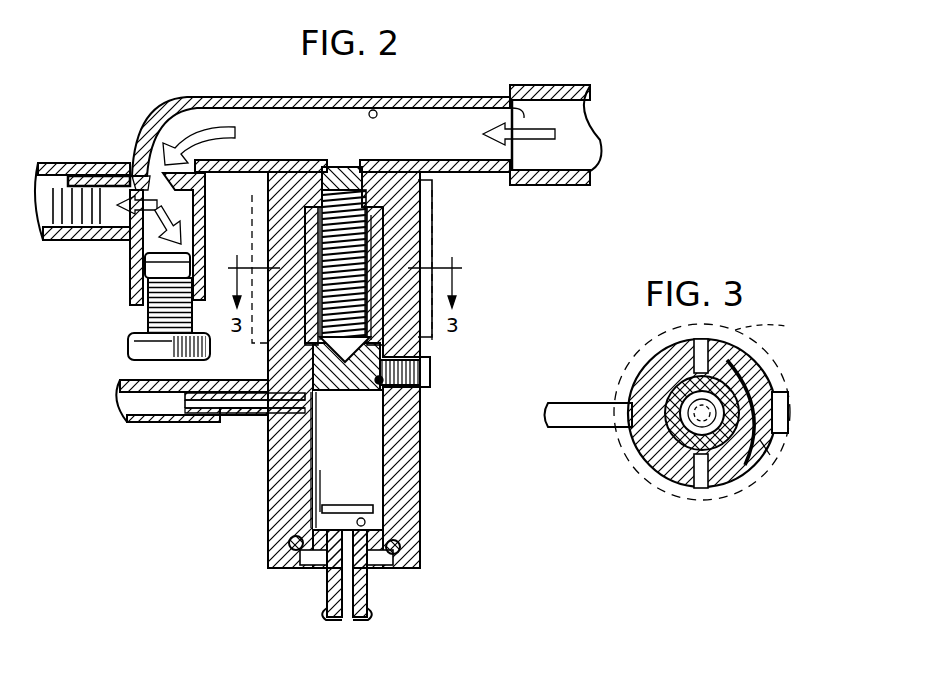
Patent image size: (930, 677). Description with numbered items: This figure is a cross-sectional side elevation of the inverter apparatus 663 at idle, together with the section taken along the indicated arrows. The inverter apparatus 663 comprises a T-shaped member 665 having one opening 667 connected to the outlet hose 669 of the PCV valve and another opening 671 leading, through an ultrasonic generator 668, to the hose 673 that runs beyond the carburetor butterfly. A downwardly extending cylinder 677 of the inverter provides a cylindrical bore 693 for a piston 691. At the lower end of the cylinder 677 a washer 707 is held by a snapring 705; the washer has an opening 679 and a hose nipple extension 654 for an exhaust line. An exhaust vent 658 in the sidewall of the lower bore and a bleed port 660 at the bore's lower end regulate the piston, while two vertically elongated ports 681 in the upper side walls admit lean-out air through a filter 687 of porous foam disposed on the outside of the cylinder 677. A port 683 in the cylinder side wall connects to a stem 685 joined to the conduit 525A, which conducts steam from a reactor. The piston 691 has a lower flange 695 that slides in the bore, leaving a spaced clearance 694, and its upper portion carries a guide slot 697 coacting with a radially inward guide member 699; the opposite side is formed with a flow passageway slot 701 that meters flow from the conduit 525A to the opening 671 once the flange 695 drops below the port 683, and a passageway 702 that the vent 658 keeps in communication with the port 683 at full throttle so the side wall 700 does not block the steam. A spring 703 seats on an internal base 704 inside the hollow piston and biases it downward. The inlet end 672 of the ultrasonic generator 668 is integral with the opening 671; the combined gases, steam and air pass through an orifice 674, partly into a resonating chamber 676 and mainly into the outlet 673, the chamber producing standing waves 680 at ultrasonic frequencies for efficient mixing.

In FIG. 2, the conduit 525A is at (165, 424).
In FIG. 2, the hose nipple extension 654 is at (368, 596).
In FIG. 2, the exhaust vent 658 is at (366, 504).
In FIG. 3, the exhaust vent 658 is at (682, 487).
In FIG. 2, the bleed port 660 is at (370, 522).
In FIG. 3, the bleed port 660 is at (771, 319).
In FIG. 2, the inverter apparatus 663 is at (445, 83).
In FIG. 2, the T-shaped member 665 is at (406, 97).
In FIG. 2, the opening 667 is at (513, 104).
In FIG. 2, the ultrasonic generator 668 is at (180, 101).
In FIG. 2, the outlet hose 669 is at (589, 123).
In FIG. 2, the opening 671 is at (371, 109).
In FIG. 2, the inlet end 672 is at (229, 98).
In FIG. 2, the hose 673 is at (67, 163).
In FIG. 2, the orifice 674 is at (143, 178).
In FIG. 2, the resonating chamber 676 is at (194, 215).
In FIG. 2, the cylinder 677 is at (416, 515).
In FIG. 2, the opening 679 is at (348, 617).
In FIG. 3, the opening 679 is at (640, 364).
In FIG. 2, the standing waves 680 is at (80, 200).
In FIG. 2, the vertically elongated ports 681 is at (430, 233).
In FIG. 3, the vertically elongated ports 681 is at (700, 342).
In FIG. 2, the port 683 is at (272, 423).
In FIG. 2, the stem 685 is at (212, 421).
In FIG. 2, the filter 687 is at (434, 212).
In FIG. 2, the piston 691 is at (372, 250).
In FIG. 3, the piston 691 is at (748, 478).
In FIG. 2, the cylindrical bore 693 is at (311, 455).
In FIG. 2, the spaced clearance 694 is at (312, 387).
In FIG. 2, the lower flange 695 is at (356, 405).
In FIG. 2, the guide slot 697 is at (427, 357).
In FIG. 3, the guide slot 697 is at (742, 390).
In FIG. 2, the guide member 699 is at (398, 388).
In FIG. 3, the guide member 699 is at (757, 462).
In FIG. 2, the side wall 700 is at (312, 233).
In FIG. 2, the flow passageway slot 701 is at (313, 330).
In FIG. 3, the flow passageway slot 701 is at (640, 452).
In FIG. 2, the passageway 702 is at (310, 262).
In FIG. 3, the passageway 702 is at (692, 412).
In FIG. 2, the spring 703 is at (365, 203).
In FIG. 3, the spring 703 is at (648, 468).
In FIG. 2, the internal base 704 is at (318, 396).
In FIG. 2, the snapring 705 is at (292, 545).
In FIG. 2, the washer 707 is at (305, 534).